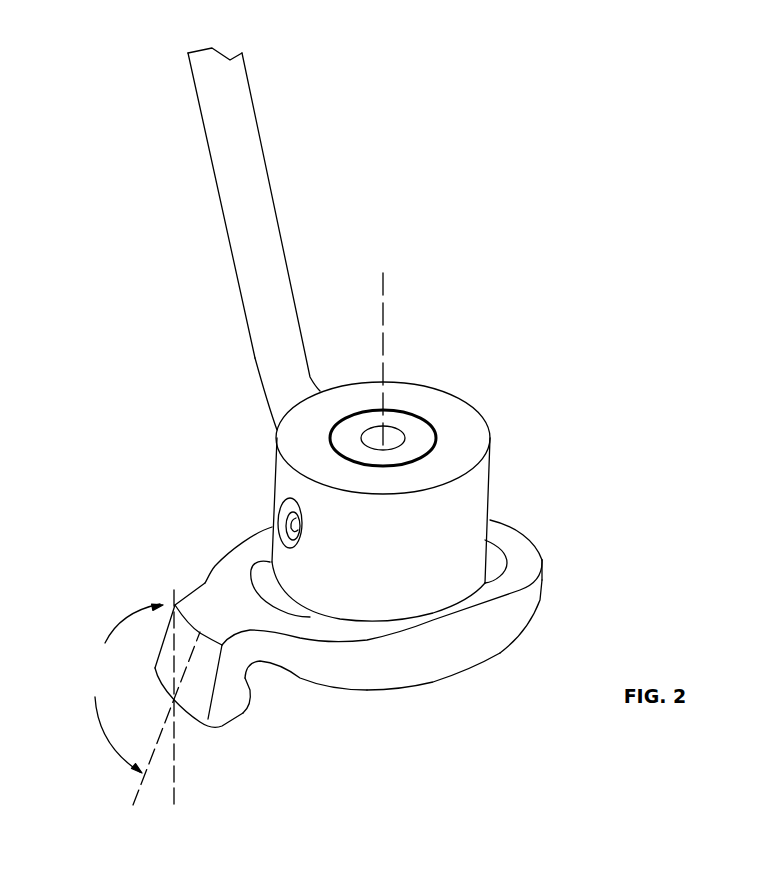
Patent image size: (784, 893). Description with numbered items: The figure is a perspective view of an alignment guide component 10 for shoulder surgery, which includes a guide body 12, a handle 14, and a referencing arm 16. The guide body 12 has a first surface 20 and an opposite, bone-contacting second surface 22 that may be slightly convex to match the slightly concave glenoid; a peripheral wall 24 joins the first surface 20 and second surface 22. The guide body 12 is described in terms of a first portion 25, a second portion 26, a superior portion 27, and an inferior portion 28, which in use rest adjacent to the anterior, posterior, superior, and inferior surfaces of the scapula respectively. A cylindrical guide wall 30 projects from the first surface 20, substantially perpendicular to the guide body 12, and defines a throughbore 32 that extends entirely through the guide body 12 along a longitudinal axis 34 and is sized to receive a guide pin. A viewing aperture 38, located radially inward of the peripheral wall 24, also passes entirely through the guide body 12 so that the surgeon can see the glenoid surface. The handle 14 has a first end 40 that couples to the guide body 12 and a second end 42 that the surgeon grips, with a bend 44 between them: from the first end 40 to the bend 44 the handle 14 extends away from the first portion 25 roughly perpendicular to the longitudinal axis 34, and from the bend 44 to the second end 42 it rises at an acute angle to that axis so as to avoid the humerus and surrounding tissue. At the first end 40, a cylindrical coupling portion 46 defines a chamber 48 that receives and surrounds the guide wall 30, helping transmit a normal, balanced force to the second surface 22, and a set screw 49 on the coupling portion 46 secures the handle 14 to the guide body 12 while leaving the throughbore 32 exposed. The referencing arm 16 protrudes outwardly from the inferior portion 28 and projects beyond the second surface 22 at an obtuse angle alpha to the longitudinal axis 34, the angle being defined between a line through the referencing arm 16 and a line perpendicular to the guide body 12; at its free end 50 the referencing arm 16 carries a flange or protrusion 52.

The alignment guide component 10 is at (523, 298).
The guide body 12 is at (517, 617).
The handle 14 is at (250, 243).
The referencing arm 16 is at (197, 705).
The first surface 20 is at (522, 553).
The second surface 22 is at (505, 655).
The peripheral wall 24 is at (383, 670).
The first portion 25 is at (227, 533).
The second portion 26 is at (452, 695).
The superior portion 27 is at (552, 548).
The inferior portion 28 is at (203, 582).
The guide wall 30 is at (427, 422).
The throughbore 32 is at (397, 435).
The longitudinal axis 34 is at (383, 298).
The viewing aperture 38 is at (267, 577).
The first end 40 is at (270, 428).
The second end 42 is at (262, 92).
The bend 44 is at (275, 363).
The coupling portion 46 is at (467, 503).
The chamber 48 is at (343, 432).
The set screw 49 is at (293, 556).
The free end 50 is at (238, 733).
The flange or protrusion 52 is at (240, 700).